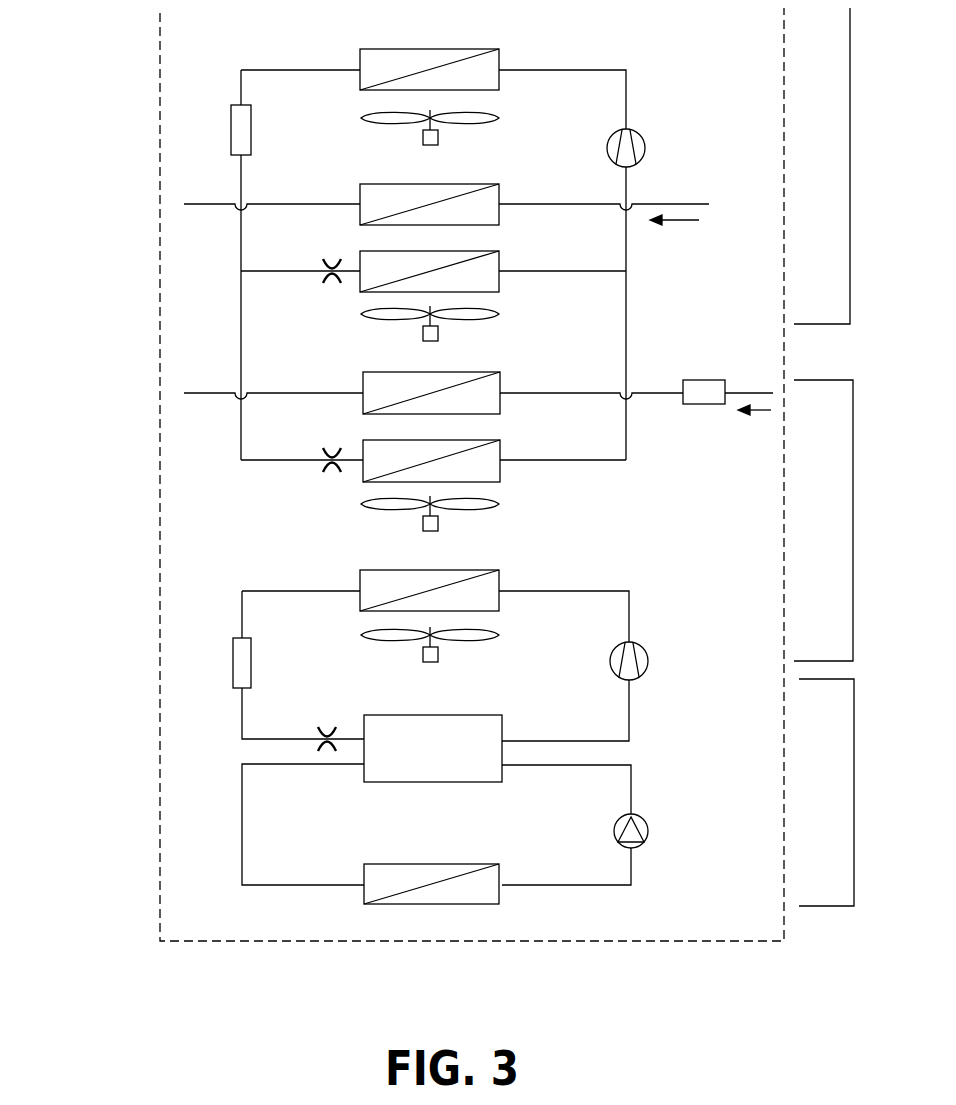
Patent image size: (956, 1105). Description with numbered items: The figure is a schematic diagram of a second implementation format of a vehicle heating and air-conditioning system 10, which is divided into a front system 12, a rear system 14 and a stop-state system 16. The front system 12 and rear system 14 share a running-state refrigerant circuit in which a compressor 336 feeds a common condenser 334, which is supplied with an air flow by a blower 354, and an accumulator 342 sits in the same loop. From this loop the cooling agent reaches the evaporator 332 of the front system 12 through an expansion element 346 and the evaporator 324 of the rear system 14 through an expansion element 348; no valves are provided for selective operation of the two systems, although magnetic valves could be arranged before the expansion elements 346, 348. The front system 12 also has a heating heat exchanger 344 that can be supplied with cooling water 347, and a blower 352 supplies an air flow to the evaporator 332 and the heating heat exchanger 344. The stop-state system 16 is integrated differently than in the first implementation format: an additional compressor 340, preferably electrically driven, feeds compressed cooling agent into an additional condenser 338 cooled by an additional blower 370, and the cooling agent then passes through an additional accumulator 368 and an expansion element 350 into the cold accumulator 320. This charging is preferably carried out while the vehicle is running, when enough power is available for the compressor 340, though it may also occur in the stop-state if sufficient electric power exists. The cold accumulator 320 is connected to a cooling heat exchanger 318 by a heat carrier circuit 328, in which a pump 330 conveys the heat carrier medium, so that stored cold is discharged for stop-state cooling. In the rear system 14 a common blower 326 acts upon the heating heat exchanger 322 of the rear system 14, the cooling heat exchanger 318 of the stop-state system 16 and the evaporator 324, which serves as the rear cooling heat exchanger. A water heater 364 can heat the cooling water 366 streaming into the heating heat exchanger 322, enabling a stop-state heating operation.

The heating and air-conditioning system 10 is at (125, 70).
The front system 12 is at (848, 195).
The rear system 14 is at (851, 492).
The stop-state system 16 is at (852, 773).
The cooling heat exchanger 318 is at (455, 903).
The cold accumulator 320 is at (456, 778).
The heating heat exchanger 322 is at (499, 383).
The evaporator 324 is at (497, 478).
The common blower 326 is at (437, 524).
The heat carrier circuit 328 is at (240, 832).
The pump 330 is at (644, 820).
The evaporator 332 is at (497, 262).
The common condenser 334 is at (446, 47).
The compressor 336 is at (644, 143).
The additional condenser 338 is at (497, 577).
The additional compressor 340 is at (644, 654).
The accumulator 342 is at (229, 130).
The heating heat exchanger 344 is at (380, 182).
The expansion element 346 is at (331, 284).
The cooling water 347 is at (697, 219).
The expansion element 348 is at (331, 473).
The expansion element 350 is at (325, 724).
The blower 352 is at (437, 335).
The blower 354 is at (437, 137).
The water heater 364 is at (697, 378).
The cooling water 366 is at (760, 410).
The additional accumulator 368 is at (231, 660).
The additional blower 370 is at (437, 655).